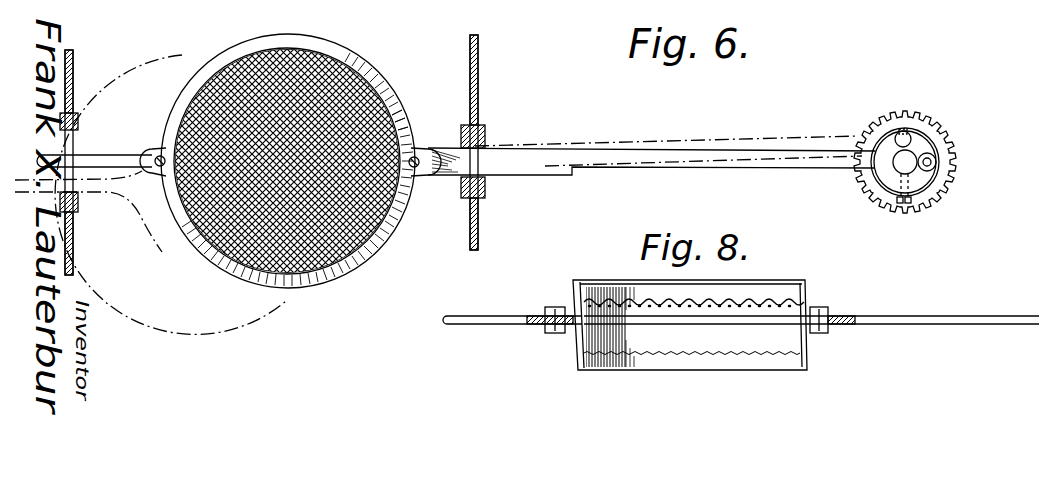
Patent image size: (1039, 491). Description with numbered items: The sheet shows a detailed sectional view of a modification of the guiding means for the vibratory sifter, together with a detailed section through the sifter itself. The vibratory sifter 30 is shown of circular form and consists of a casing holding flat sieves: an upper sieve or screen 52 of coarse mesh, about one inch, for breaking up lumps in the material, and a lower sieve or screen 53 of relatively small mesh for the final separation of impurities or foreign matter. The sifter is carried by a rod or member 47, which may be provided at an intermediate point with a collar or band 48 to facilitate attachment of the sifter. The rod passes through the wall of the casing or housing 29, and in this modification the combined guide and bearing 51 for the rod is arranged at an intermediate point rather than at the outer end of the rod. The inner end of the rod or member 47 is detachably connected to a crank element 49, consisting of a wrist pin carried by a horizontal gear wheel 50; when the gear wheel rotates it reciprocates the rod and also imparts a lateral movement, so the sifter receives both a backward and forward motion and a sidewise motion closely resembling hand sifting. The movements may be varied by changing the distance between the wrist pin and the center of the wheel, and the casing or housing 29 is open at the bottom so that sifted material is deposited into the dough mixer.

In FIG. 6, the casing 29 is at (73, 78).
In FIG. 6, the vibratory sifter 30 is at (398, 220).
In FIG. 8, the vibratory sifter 30 is at (808, 340).
In FIG. 6, the rod or member 47 is at (590, 157).
In FIG. 8, the rod or member 47 is at (982, 318).
In FIG. 6, the collar or band 48 is at (327, 47).
In FIG. 6, the crank element 49 is at (928, 128).
In FIG. 6, the horizontal gear wheel 50 is at (885, 118).
In FIG. 6, the combined guide and bearing 51 is at (488, 130).
In FIG. 6, the upper sieve or screen 52 is at (240, 233).
In FIG. 8, the upper sieve or screen 52 is at (760, 302).
In FIG. 8, the lower sieve or screen 53 is at (670, 355).